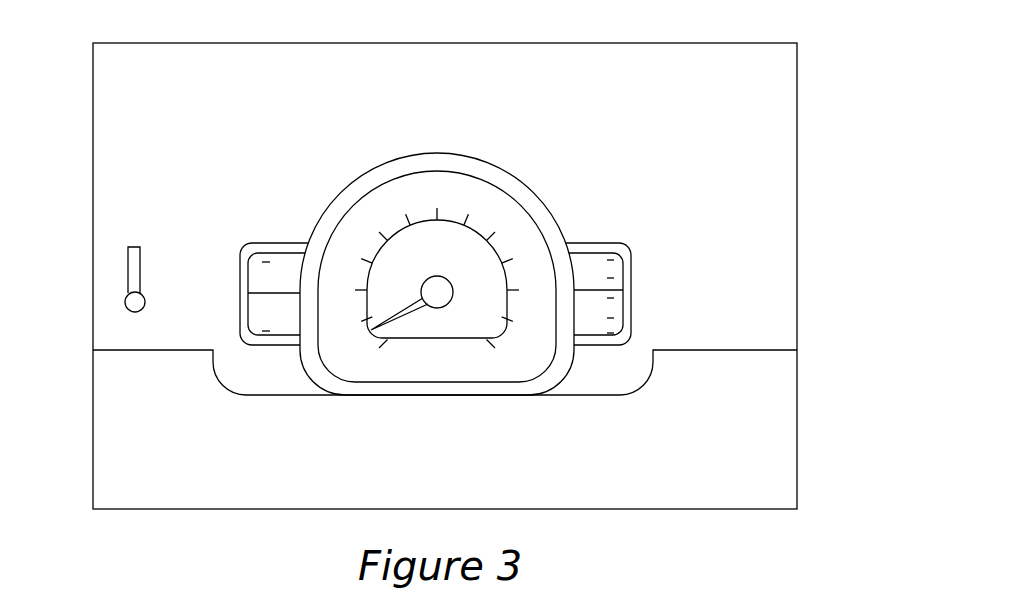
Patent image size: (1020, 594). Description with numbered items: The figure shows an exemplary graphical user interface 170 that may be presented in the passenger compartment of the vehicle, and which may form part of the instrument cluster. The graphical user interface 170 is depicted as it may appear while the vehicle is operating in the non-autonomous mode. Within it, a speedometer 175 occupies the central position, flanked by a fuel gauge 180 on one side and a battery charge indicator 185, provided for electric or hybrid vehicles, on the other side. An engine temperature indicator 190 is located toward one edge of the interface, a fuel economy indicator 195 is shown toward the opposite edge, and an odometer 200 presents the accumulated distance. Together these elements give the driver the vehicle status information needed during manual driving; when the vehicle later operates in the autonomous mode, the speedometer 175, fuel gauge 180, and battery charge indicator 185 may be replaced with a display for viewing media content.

The graphical user interface 170 is at (652, 86).
The speedometer 175 is at (458, 184).
The fuel gauge 180 is at (600, 244).
The battery charge indicator 185 is at (268, 244).
The engine temperature indicator 190 is at (122, 238).
The fuel economy indicator 195 is at (755, 223).
The odometer 200 is at (92, 351).